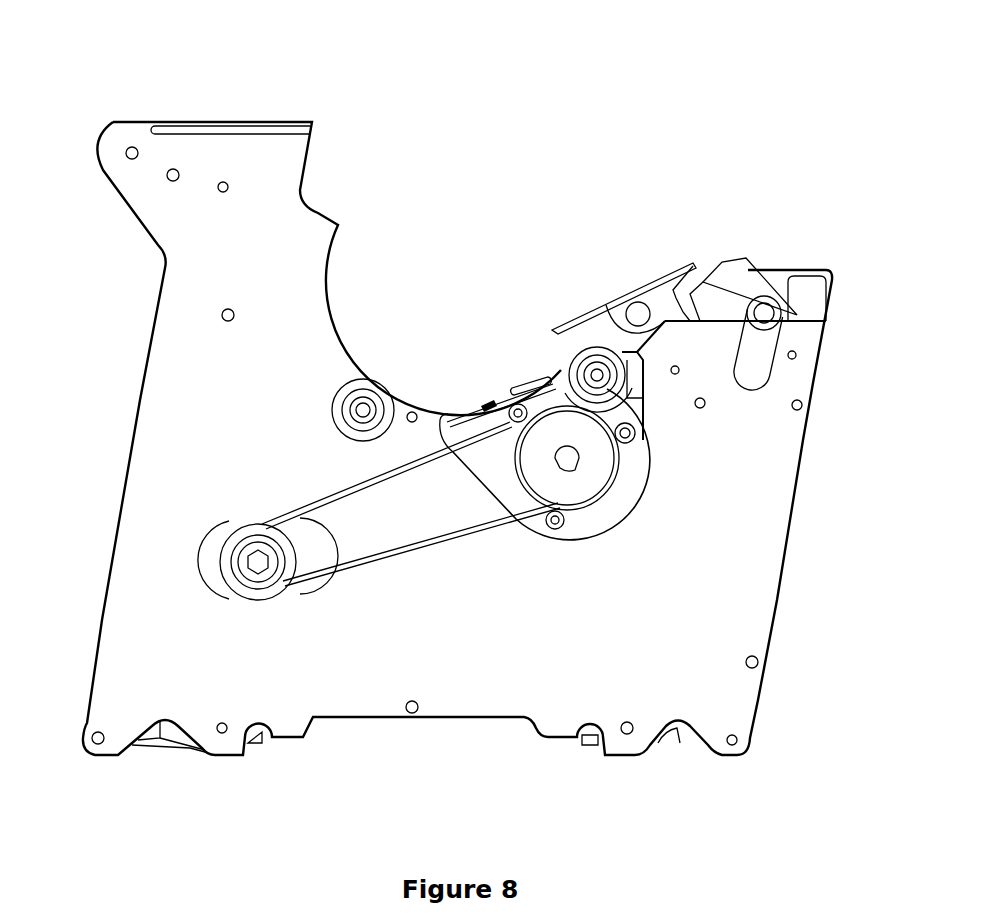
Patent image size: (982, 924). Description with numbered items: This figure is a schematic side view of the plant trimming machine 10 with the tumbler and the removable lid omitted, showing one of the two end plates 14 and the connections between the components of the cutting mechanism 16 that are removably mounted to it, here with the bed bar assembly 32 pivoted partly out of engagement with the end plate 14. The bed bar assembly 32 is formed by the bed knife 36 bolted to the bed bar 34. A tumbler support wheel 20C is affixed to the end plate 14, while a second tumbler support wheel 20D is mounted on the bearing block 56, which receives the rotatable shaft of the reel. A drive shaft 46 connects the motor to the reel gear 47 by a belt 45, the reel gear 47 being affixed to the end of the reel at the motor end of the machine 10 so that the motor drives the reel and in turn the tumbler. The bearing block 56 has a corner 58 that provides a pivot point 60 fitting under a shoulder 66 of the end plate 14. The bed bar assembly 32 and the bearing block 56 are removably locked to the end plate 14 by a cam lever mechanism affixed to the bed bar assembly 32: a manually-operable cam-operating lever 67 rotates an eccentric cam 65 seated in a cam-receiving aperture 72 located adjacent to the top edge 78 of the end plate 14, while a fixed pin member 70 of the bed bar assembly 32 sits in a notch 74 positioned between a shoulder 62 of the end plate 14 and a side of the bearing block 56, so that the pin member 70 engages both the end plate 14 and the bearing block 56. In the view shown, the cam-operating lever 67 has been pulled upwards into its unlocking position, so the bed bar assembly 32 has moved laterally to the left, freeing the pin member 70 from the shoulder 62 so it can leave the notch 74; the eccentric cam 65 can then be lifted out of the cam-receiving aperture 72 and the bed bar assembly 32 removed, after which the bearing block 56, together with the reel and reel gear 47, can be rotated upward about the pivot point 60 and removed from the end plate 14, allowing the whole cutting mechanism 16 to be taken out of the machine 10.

The plant trimming machine 10 is at (429, 114).
The end plate 14 is at (128, 522).
The cutting mechanism 16 is at (716, 259).
The tumbler support wheel 20C is at (362, 404).
The tumbler support wheel 20D is at (595, 372).
The bed bar assembly 32 is at (777, 291).
The bed bar 34 is at (822, 270).
The bed knife 36 is at (552, 328).
The belt 45 is at (430, 548).
The drive shaft 46 is at (252, 588).
The reel gear 47 is at (597, 468).
The bearing block 56 is at (568, 545).
The corner 58 is at (455, 422).
The pivot point 60 is at (435, 430).
The shoulder 62 is at (651, 355).
The eccentric cam 65 is at (817, 337).
The shoulder 66 is at (446, 418).
The cam-operating lever 67 is at (717, 290).
The pin member 70 is at (638, 302).
The cam-receiving aperture 72 is at (748, 373).
The notch 74 is at (636, 360).
The top edge 78 is at (818, 334).